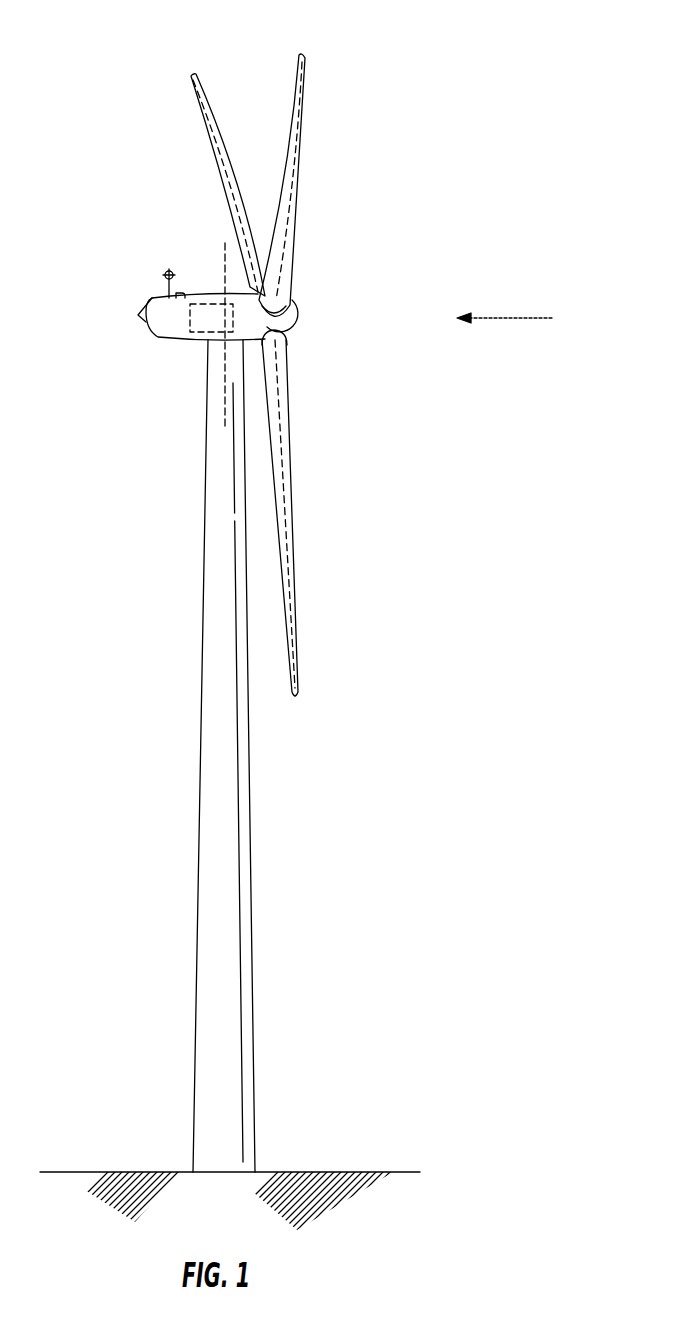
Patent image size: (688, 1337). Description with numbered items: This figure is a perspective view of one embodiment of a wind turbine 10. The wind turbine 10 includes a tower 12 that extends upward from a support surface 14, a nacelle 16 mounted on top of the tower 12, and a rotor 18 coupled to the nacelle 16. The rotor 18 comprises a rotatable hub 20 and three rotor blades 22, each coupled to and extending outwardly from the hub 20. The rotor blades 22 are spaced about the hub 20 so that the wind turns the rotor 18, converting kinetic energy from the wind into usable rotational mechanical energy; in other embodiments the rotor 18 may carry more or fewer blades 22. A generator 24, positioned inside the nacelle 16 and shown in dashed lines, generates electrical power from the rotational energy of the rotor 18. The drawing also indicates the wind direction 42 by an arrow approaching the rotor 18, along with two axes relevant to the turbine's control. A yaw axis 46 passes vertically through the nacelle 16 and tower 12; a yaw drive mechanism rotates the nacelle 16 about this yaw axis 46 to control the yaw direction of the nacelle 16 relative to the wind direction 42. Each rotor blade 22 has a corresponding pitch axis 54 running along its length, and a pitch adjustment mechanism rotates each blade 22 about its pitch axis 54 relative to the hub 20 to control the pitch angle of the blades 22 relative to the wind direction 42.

The wind turbine 10 is at (395, 138).
The tower 12 is at (210, 868).
The support surface 14 is at (118, 1172).
The nacelle 16 is at (183, 341).
The rotor 18 is at (305, 293).
The rotatable hub 20 is at (297, 322).
The rotor blade 22 is at (293, 102).
The generator 24 is at (212, 292).
The wind direction 42 is at (495, 318).
The yaw axis 46 is at (223, 380).
The pitch axis 54 is at (223, 183).